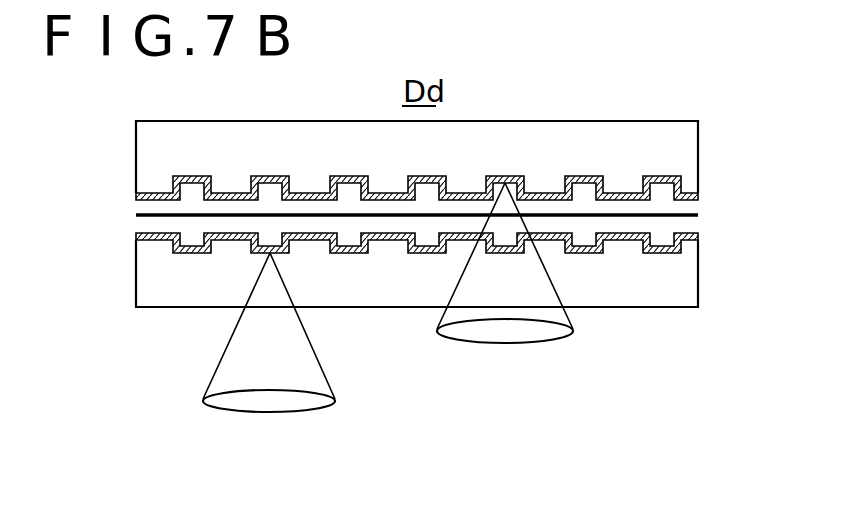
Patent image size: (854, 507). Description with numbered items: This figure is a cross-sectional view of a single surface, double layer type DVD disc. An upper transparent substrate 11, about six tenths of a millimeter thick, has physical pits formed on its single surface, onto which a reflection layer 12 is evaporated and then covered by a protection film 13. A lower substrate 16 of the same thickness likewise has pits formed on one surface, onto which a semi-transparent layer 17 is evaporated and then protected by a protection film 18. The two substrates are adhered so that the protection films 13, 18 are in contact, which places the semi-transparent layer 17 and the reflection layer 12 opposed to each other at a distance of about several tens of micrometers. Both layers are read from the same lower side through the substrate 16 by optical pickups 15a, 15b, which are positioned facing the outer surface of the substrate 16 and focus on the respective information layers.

The substrate 11 is at (678, 153).
The reflection layer 12 is at (696, 193).
The protection film 13 is at (146, 207).
The protection film 18 is at (146, 222).
The semi-transparent layer 17 is at (696, 238).
The substrate 16 is at (676, 282).
The optical pickup 15a is at (336, 398).
The optical pickup 15b is at (500, 343).